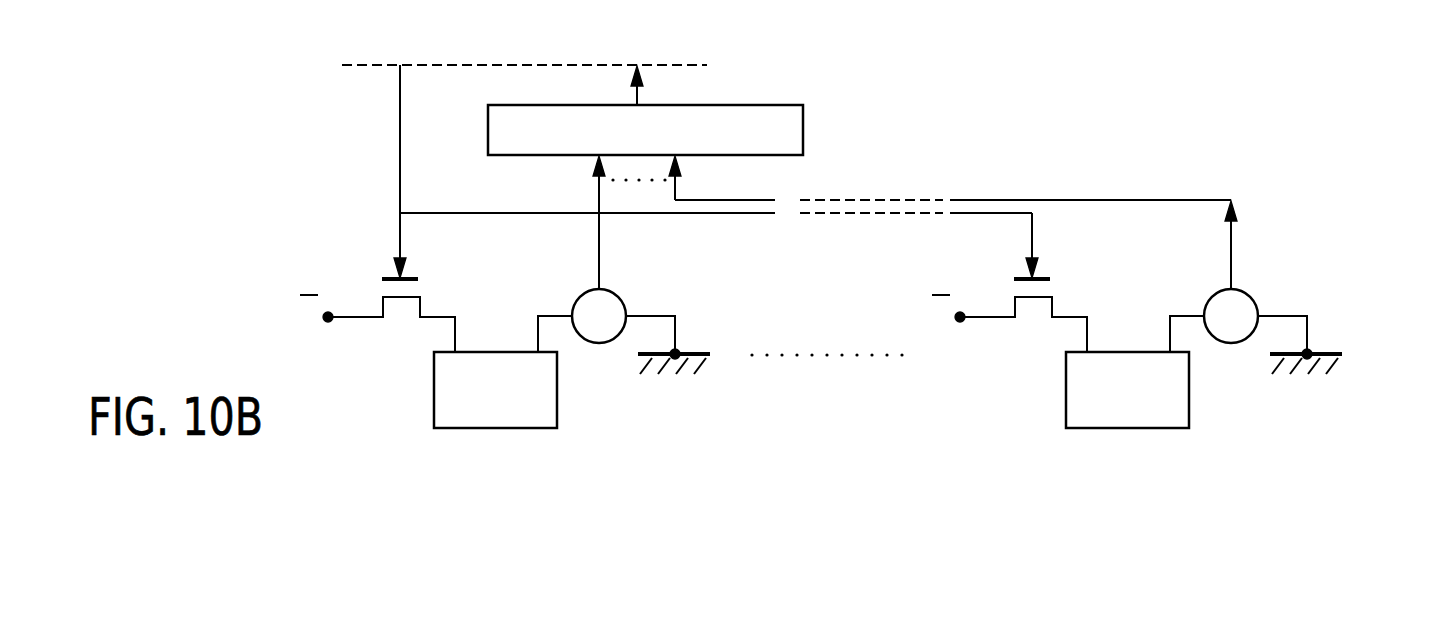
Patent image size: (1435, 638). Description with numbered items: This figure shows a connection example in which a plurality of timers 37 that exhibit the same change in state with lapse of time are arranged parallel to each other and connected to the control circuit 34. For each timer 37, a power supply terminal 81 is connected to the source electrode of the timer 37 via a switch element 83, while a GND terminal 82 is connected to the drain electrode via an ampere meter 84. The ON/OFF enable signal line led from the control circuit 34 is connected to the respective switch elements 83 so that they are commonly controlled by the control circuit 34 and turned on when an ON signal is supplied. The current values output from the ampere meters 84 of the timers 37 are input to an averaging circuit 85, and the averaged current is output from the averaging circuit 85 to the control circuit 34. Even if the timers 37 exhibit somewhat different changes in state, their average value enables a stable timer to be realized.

The control circuit 34 is at (524, 46).
The averaging circuit 85 is at (803, 128).
The switch element 83 is at (381, 281).
The power supply terminal 81 is at (329, 326).
The timer 37 is at (458, 429).
The ampere meter 84 is at (620, 298).
The GND terminal 82 is at (686, 340).